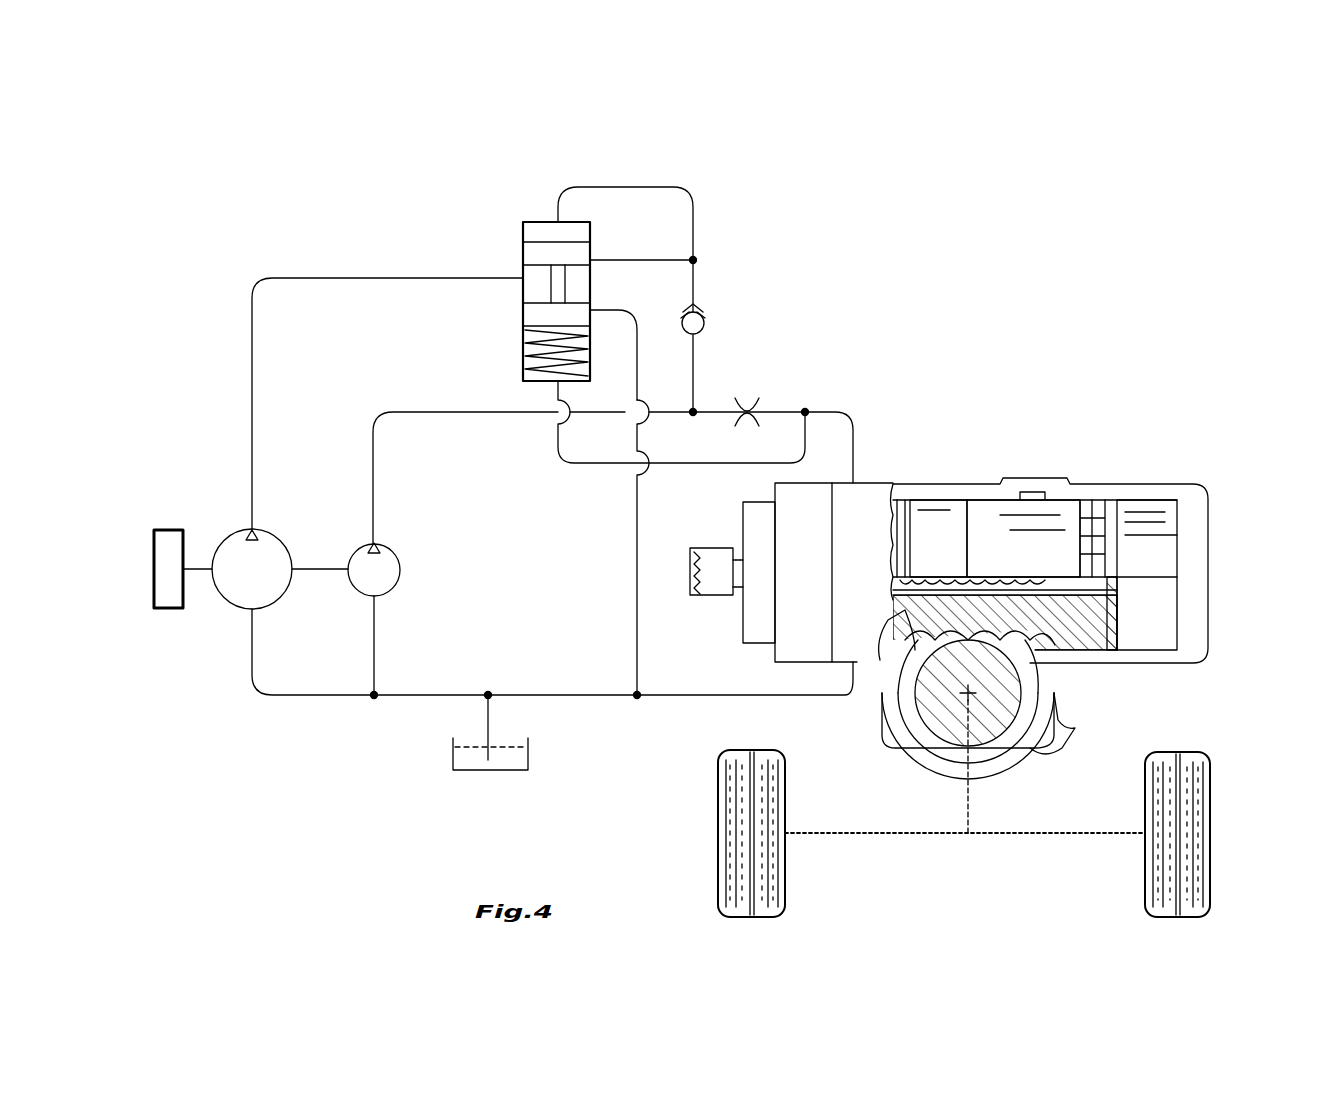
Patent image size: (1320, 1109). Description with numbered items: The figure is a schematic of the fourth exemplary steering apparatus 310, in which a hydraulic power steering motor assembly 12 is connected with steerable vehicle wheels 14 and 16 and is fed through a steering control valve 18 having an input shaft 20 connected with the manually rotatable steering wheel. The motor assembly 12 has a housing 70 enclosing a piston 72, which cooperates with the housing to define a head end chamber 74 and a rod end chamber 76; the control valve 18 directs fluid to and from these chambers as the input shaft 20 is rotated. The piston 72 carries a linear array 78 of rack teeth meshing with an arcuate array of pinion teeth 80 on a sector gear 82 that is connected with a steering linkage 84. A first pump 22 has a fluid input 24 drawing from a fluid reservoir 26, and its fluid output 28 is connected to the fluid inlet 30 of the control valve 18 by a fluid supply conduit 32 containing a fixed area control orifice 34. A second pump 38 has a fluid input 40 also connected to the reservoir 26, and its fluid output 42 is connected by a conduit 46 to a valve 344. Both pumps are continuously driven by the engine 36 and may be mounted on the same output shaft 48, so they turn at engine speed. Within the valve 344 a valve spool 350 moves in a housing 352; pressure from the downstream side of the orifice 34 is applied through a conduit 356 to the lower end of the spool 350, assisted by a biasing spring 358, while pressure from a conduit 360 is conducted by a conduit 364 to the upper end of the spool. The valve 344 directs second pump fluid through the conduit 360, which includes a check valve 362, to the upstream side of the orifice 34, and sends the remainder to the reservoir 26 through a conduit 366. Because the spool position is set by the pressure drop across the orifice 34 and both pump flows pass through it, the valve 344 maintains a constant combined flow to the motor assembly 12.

The hydraulic power steering motor assembly 12 is at (1220, 556).
The steerable vehicle wheel 14 is at (722, 882).
The steerable vehicle wheel 16 is at (1200, 884).
The steering control valve 18 is at (758, 644).
The input shaft 20 is at (708, 586).
The first pump 22 is at (385, 577).
The fluid input 24 is at (378, 594).
The fluid reservoir 26 is at (476, 760).
The fluid output 28 is at (378, 546).
The fluid inlet 30 is at (858, 483).
The fluid supply conduit 32 is at (476, 410).
The fixed area control orifice 34 is at (748, 408).
The engine 36 is at (168, 590).
The second pump 38 is at (237, 565).
The fluid input 40 is at (255, 608).
The fluid output 42 is at (256, 532).
The conduit 46 is at (342, 276).
The output shaft 48 is at (200, 574).
The housing 70 is at (1135, 494).
The piston 72 is at (988, 530).
The head end chamber 74 is at (885, 640).
The rod end chamber 76 is at (1160, 620).
The linear array of rack teeth 78 is at (1080, 662).
The pinion teeth 80 is at (1075, 695).
The sector gear 82 is at (945, 707).
The steering linkage 84 is at (972, 793).
The steering apparatus 310 is at (1062, 322).
The valve 344 is at (523, 220).
The valve spool 350 is at (535, 256).
The housing 352 is at (595, 240).
The conduit 356 is at (584, 466).
The biasing spring 358 is at (535, 355).
The conduit 360 is at (640, 264).
The check valve 362 is at (705, 320).
The conduit 364 is at (695, 215).
The conduit 366 is at (635, 596).